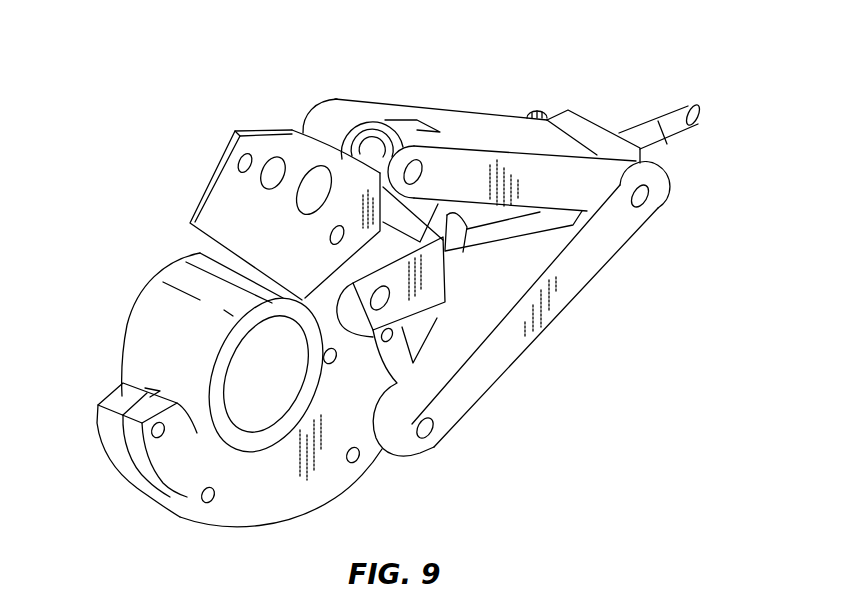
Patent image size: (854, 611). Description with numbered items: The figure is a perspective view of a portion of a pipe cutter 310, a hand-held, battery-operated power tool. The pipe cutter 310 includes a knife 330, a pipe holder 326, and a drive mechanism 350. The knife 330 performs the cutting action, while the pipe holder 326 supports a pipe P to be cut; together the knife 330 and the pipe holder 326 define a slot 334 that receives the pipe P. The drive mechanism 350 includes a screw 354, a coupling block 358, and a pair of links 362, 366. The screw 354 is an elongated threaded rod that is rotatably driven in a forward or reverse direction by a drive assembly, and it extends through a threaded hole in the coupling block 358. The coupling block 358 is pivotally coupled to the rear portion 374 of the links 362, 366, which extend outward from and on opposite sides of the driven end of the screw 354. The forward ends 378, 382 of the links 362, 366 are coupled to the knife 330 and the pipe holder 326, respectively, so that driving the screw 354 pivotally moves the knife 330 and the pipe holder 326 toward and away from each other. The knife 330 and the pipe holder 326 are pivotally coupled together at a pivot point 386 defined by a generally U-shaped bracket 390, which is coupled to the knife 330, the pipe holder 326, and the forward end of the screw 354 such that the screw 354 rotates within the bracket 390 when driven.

The pipe cutter 310 is at (499, 64).
The pipe holder 326 is at (185, 483).
The knife 330 is at (222, 163).
The slot 334 is at (136, 270).
The drive mechanism 350 is at (605, 314).
The screw 354 is at (684, 123).
The coupling block 358 is at (590, 130).
The link 362 is at (447, 118).
The link 366 is at (508, 347).
The rear portion 374 is at (652, 208).
The forward end 378 is at (325, 116).
The forward end 382 is at (411, 459).
The pivot point 386 is at (424, 405).
The bracket 390 is at (427, 288).
The pipe P is at (133, 330).